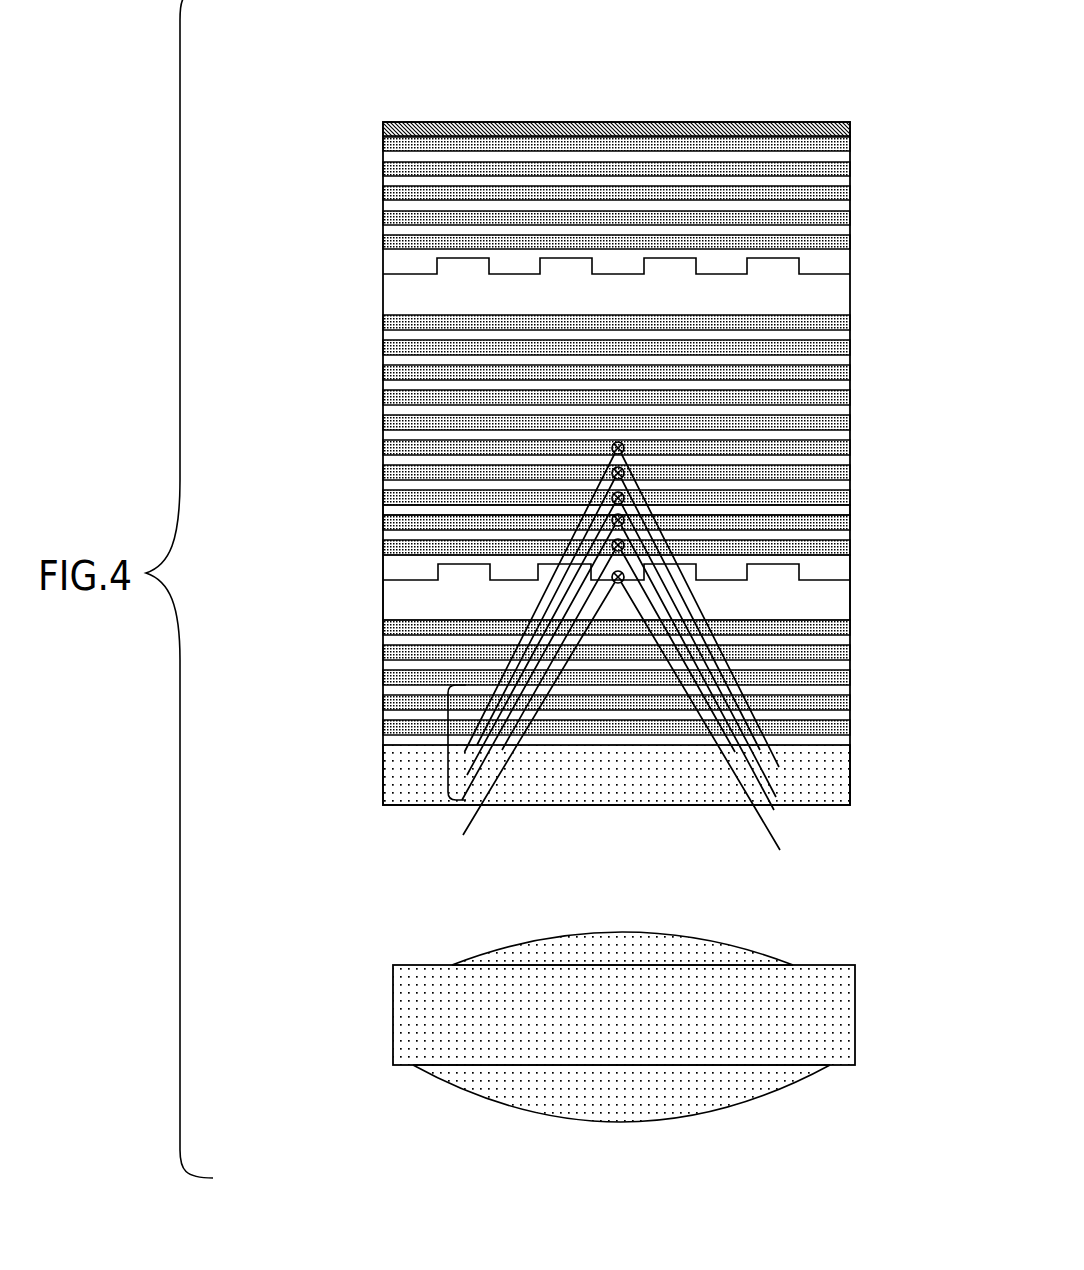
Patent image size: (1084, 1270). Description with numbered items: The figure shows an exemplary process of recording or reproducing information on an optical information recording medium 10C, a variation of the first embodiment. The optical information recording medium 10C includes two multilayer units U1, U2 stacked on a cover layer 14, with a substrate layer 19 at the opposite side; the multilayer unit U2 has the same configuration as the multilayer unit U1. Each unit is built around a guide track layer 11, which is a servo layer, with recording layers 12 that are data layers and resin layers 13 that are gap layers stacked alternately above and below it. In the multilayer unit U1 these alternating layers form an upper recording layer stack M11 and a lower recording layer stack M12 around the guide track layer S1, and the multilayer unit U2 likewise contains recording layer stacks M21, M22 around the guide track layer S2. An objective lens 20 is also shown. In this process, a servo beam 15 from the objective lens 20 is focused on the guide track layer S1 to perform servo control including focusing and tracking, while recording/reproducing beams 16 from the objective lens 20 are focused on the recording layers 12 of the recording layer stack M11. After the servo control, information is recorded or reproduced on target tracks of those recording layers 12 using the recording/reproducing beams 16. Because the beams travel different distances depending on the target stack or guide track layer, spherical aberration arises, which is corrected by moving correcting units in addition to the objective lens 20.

The optical information recording medium 10C is at (430, 58).
The substrate layer 19 is at (852, 127).
The resin layer 13 is at (846, 511).
The recording layer 12 is at (846, 547).
The guide track layer 11 is at (846, 602).
The cover layer 14 is at (850, 775).
The servo beam 15 is at (604, 646).
The recording/reproducing beams 16 is at (447, 743).
The objective lens 20 is at (848, 1012).
The recording layer stack M21 is at (365, 137).
The recording layer stack M22 is at (365, 318).
The recording layer stack M11 is at (366, 440).
The recording layer stack M12 is at (366, 622).
The guide track layer S1 is at (589, 585).
The guide track layer S2 is at (587, 281).
The multilayer unit U1 is at (270, 443).
The multilayer unit U2 is at (268, 137).